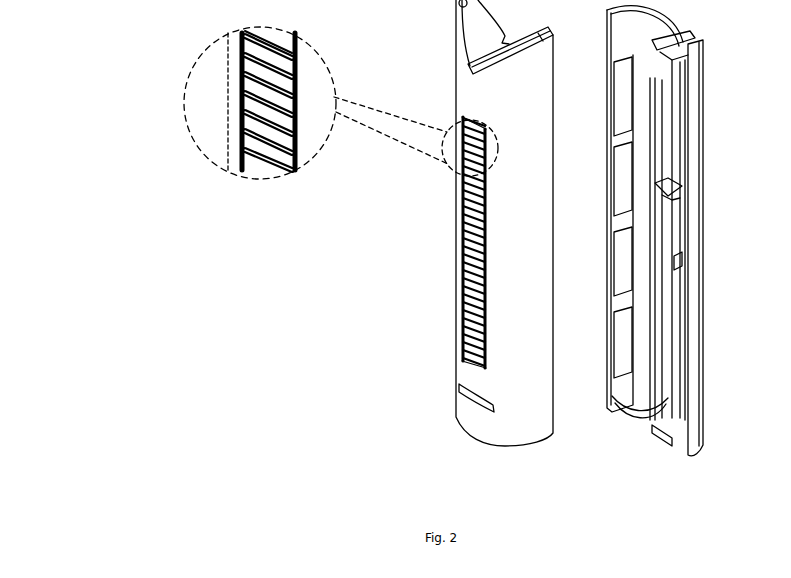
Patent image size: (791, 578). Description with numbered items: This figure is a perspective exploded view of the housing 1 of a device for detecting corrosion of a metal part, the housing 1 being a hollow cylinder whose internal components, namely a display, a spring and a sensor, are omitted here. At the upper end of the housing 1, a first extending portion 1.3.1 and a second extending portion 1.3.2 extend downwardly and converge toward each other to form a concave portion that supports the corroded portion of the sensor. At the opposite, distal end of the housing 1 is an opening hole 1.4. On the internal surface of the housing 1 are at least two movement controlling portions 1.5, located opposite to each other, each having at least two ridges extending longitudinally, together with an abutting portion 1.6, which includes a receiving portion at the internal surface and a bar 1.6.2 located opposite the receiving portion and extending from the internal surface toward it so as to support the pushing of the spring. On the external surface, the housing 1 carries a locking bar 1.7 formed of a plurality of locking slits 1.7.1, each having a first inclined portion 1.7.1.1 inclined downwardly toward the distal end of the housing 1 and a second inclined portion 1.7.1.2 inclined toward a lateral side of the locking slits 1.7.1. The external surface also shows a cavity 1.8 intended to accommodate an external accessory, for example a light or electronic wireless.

The housing 1 is at (704, 290).
The first extending portion 1.3.1 is at (458, 13).
The second extending portion 1.3.2 is at (508, 50).
The opening hole 1.4 is at (646, 421).
The movement controlling portion 1.5 is at (681, 263).
The abutting portion 1.6 is at (683, 190).
The bar 1.6.2 is at (680, 205).
The locking bar 1.7 is at (452, 197).
The locking slits 1.7.1 is at (455, 152).
The first inclined portion 1.7.1.1 is at (243, 70).
The second inclined portion 1.7.1.2 is at (243, 57).
The cavity 1.8 is at (459, 393).